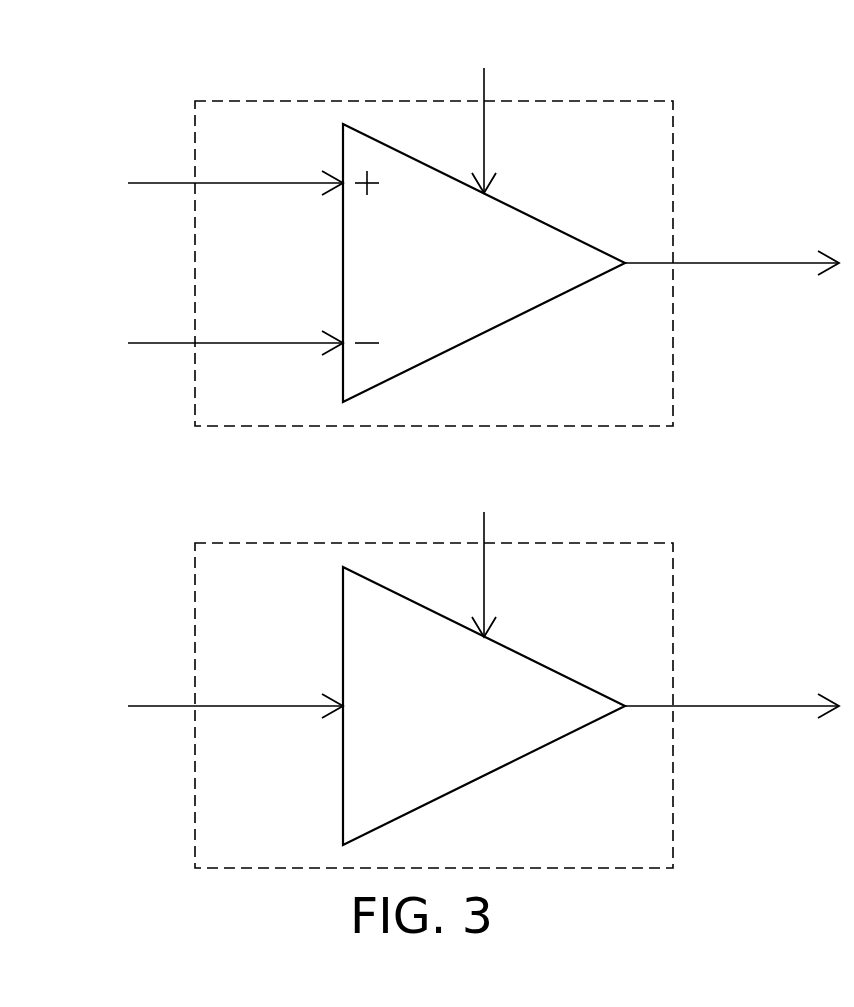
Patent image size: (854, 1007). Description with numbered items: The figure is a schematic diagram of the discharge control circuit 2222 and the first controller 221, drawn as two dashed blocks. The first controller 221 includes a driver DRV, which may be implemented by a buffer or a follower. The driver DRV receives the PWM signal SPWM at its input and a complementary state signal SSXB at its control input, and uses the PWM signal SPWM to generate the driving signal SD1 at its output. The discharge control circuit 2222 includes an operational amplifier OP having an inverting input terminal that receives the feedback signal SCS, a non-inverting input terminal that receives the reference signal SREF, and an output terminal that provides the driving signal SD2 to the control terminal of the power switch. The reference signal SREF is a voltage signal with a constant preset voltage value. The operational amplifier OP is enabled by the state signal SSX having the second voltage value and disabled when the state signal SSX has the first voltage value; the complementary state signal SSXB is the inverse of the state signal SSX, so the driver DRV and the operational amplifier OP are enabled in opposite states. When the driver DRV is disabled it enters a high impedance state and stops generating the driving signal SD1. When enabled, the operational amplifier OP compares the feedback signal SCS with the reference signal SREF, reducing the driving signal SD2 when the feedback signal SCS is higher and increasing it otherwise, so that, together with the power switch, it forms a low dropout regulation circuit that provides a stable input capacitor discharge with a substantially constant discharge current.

The discharge control circuit 2222 is at (457, 230).
The first controller 221 is at (454, 673).
The operational amplifier OP is at (541, 220).
The driver DRV is at (541, 664).
The reference signal SREF is at (209, 183).
The feedback signal SCS is at (214, 347).
The state signal SSX is at (485, 114).
The driving signal SD2 is at (732, 251).
The PWM signal SPWM is at (206, 705).
The complementary state signal SSXB is at (484, 557).
The driving signal SD1 is at (732, 694).